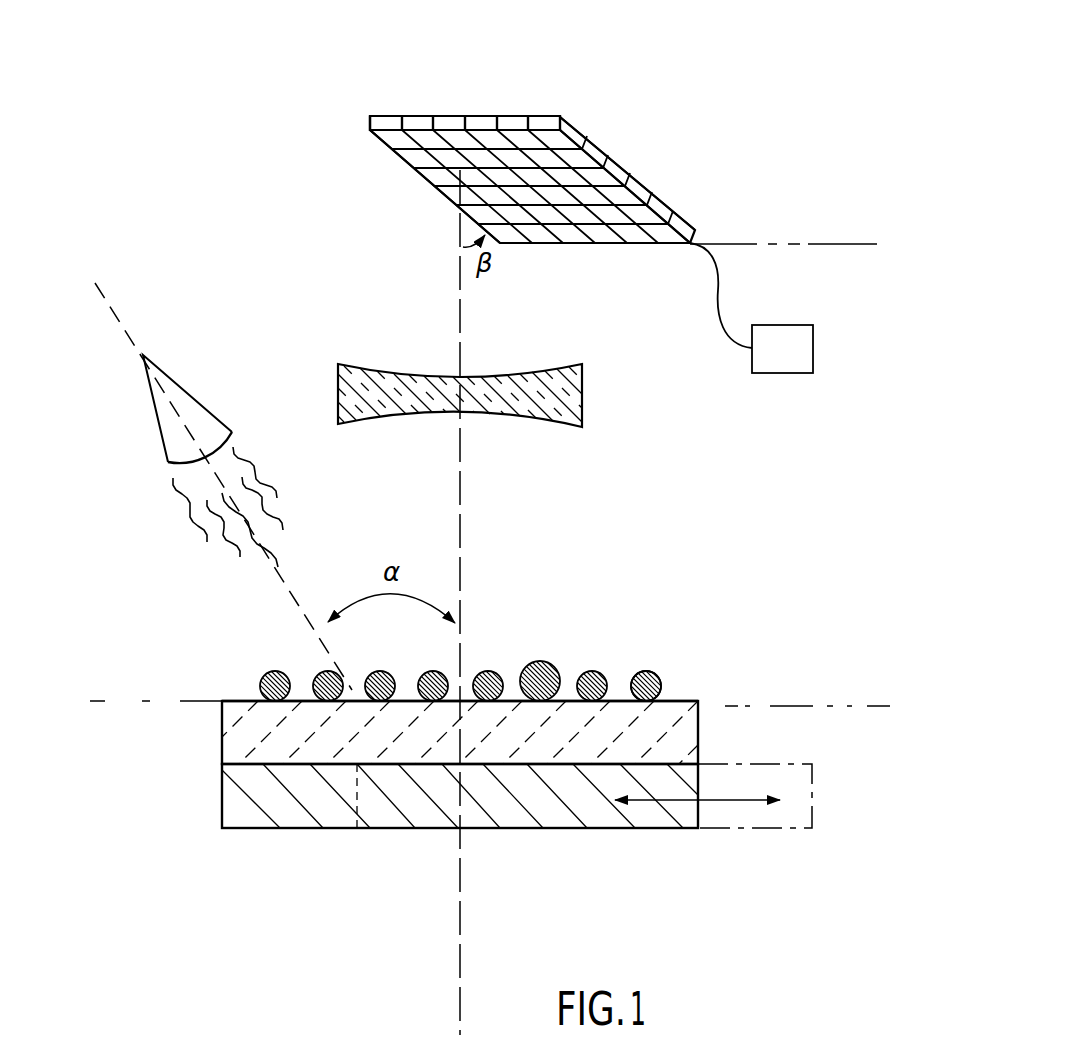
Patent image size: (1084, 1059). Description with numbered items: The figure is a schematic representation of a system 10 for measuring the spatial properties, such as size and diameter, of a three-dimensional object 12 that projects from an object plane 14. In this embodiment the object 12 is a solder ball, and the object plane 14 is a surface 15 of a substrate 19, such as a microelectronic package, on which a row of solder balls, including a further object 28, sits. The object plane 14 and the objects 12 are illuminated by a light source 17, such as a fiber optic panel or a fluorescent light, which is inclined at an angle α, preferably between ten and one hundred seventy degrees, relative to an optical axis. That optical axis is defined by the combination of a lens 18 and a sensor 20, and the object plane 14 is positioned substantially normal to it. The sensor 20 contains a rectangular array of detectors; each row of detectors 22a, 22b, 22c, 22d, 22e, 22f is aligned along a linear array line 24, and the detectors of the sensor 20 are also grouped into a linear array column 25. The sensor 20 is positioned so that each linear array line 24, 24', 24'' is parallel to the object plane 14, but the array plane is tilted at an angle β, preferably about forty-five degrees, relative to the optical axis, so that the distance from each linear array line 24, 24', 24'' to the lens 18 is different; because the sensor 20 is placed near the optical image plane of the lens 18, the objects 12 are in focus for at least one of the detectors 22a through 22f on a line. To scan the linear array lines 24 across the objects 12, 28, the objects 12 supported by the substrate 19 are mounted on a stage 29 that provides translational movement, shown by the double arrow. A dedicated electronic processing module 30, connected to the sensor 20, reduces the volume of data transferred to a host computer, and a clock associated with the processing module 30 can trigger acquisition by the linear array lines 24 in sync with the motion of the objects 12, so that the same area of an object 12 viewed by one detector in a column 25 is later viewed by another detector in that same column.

The system 10 is at (285, 80).
The object 12 is at (656, 683).
The object plane 14 is at (760, 702).
The surface 15 is at (299, 700).
The light source 17 is at (185, 420).
The lens 18 is at (582, 392).
The substrate 19 is at (232, 731).
The sensor 20 is at (628, 145).
The detector 22a is at (393, 114).
The detector 22b is at (427, 114).
The detector 22c is at (452, 114).
The detector 22d is at (492, 114).
The detector 22e is at (517, 114).
The detector 22f is at (555, 114).
The linear array line 24 is at (385, 179).
The linear array line 24' is at (661, 181).
The linear array line 24'' is at (651, 161).
The linear array column 25 is at (523, 252).
The object 28 is at (552, 668).
The stage 29 is at (257, 817).
The electronic processing module 30 is at (796, 362).